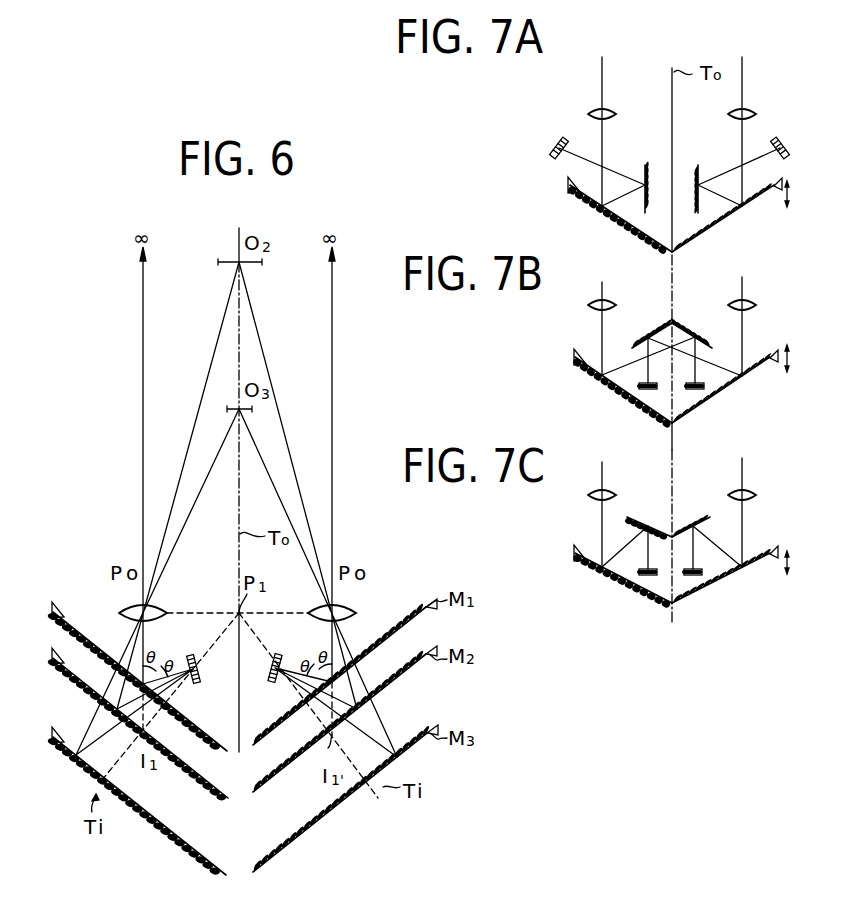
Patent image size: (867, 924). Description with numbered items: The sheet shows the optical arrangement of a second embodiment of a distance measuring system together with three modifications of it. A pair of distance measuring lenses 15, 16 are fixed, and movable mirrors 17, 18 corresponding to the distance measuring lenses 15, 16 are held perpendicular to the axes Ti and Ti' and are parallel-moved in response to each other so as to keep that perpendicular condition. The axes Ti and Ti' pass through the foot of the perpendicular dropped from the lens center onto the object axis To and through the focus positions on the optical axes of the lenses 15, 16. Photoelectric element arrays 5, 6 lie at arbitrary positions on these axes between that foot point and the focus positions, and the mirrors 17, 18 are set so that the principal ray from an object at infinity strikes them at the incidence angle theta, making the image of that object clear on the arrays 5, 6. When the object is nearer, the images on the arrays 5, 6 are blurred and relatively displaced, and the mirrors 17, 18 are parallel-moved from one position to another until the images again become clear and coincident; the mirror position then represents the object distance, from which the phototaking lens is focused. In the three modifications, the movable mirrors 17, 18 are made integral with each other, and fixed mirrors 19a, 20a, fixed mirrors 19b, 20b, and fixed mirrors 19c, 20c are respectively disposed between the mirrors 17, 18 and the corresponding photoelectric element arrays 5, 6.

In FIG. 6, the photoelectric element array 5 is at (271, 684).
In FIG. 7A, the photoelectric element array 5 is at (783, 144).
In FIG. 7B, the photoelectric element array 5 is at (695, 389).
In FIG. 7C, the photoelectric element array 5 is at (693, 575).
In FIG. 6, the photoelectric element array 6 is at (199, 672).
In FIG. 7A, the photoelectric element array 6 is at (554, 143).
In FIG. 7B, the photoelectric element array 6 is at (648, 389).
In FIG. 7C, the photoelectric element array 6 is at (648, 575).
In FIG. 6, the distance measuring lens 15 is at (350, 612).
In FIG. 7A, the distance measuring lens 15 is at (751, 110).
In FIG. 7B, the distance measuring lens 15 is at (753, 302).
In FIG. 7C, the distance measuring lens 15 is at (752, 493).
In FIG. 6, the distance measuring lens 16 is at (127, 611).
In FIG. 7A, the distance measuring lens 16 is at (604, 110).
In FIG. 7B, the distance measuring lens 16 is at (604, 302).
In FIG. 7C, the distance measuring lens 16 is at (604, 492).
In FIG. 6, the movable mirror 17 is at (420, 607).
In FIG. 7A, the movable mirror 17 is at (752, 205).
In FIG. 7B, the movable mirror 17 is at (758, 372).
In FIG. 7C, the movable mirror 17 is at (760, 565).
In FIG. 6, the movable mirror 18 is at (58, 604).
In FIG. 7A, the movable mirror 18 is at (613, 217).
In FIG. 7B, the movable mirror 18 is at (608, 385).
In FIG. 7C, the movable mirror 18 is at (602, 570).
In FIG. 7A, the fixed mirror 19a is at (698, 163).
In FIG. 7B, the fixed mirror 19b is at (697, 338).
In FIG. 7C, the fixed mirror 19c is at (690, 524).
In FIG. 7A, the fixed mirror 20a is at (645, 163).
In FIG. 7B, the fixed mirror 20b is at (645, 338).
In FIG. 7C, the fixed mirror 20c is at (649, 524).